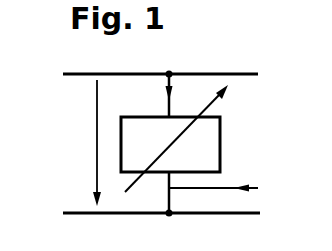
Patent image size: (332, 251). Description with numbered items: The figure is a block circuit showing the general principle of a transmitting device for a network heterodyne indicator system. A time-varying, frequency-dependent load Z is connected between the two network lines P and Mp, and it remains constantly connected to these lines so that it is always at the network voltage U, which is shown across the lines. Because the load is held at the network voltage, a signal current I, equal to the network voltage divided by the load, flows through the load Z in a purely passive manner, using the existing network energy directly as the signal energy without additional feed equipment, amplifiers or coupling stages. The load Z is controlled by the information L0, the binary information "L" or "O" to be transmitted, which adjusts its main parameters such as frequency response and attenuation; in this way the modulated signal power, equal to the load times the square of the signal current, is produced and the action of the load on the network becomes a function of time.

The network line P is at (152, 74).
The network line Mp is at (147, 213).
The signal current I is at (145, 95).
The network voltage U is at (79, 143).
The load Z is at (174, 149).
The information to be transmitted L0 is at (222, 187).